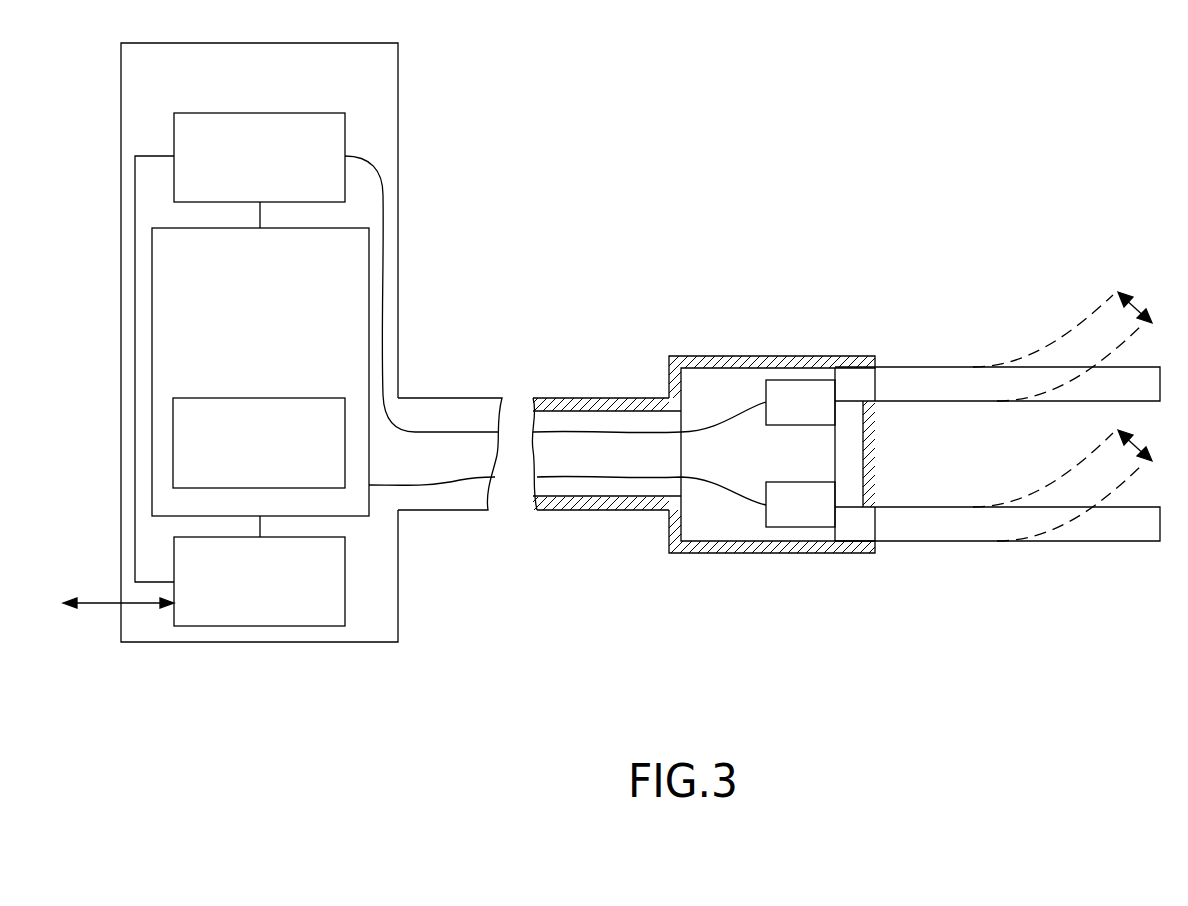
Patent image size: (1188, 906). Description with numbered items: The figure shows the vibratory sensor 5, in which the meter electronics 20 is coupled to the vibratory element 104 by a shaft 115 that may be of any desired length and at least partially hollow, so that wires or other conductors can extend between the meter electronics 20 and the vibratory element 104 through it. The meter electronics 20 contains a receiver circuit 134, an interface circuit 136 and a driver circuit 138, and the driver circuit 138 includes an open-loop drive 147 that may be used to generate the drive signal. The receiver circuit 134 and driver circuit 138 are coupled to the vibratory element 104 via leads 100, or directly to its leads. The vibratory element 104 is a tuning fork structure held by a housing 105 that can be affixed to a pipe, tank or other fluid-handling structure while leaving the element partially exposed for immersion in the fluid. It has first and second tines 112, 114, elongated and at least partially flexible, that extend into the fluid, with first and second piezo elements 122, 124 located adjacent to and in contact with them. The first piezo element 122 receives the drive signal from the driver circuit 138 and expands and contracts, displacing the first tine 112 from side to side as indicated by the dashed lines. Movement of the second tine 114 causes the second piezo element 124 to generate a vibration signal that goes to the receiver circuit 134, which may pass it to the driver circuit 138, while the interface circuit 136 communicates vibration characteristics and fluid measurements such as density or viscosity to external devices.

The vibratory sensor 5 is at (317, 677).
The meter electronics 20 is at (247, 100).
The leads 100 is at (100, 603).
The vibratory element 104 is at (1003, 593).
The housing 105 is at (722, 355).
The first tine 112 is at (918, 541).
The second tine 114 is at (910, 367).
The shaft 115 is at (447, 395).
The first piezo element 122 is at (787, 553).
The second piezo element 124 is at (793, 380).
The receiver circuit 134 is at (243, 193).
The interface circuit 136 is at (245, 620).
The driver circuit 138 is at (244, 288).
The open-loop drive 147 is at (243, 481).